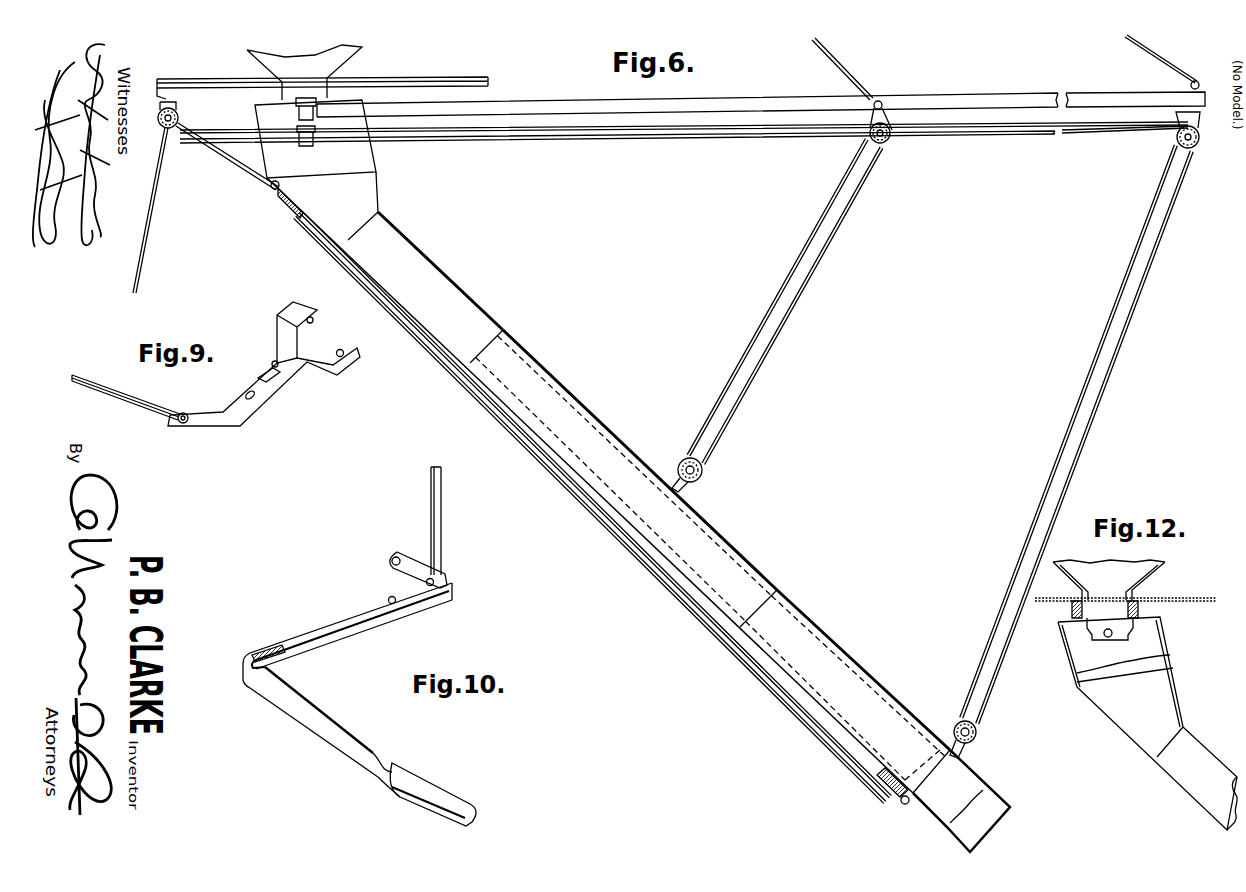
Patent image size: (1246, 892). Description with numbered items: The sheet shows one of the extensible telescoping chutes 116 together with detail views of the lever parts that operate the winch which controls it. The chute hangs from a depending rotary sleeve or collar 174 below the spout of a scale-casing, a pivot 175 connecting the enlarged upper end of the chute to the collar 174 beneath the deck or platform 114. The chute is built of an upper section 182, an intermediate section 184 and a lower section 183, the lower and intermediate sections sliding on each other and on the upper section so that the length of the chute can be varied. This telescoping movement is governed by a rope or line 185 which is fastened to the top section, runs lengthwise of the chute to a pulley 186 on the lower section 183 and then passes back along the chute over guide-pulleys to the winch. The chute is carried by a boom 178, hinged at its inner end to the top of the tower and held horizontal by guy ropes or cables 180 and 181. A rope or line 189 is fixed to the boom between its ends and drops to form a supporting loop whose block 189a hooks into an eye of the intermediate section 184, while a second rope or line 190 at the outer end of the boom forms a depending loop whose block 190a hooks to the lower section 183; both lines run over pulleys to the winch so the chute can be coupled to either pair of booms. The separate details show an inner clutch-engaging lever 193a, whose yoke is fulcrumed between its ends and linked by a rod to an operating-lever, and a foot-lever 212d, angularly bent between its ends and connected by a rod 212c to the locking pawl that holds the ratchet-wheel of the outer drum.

In FIG. 6, the table top 114 is at (413, 80).
In FIG. 12, the table top 114 is at (1202, 597).
In FIG. 6, the extensible telescoping chute 116 is at (623, 475).
In FIG. 12, the depending rotary sleeve or collar 174 is at (1145, 598).
In FIG. 12, the pivot 175 is at (1102, 637).
In FIG. 6, the boom 178 is at (528, 100).
In FIG. 6, the guy rope or cable 180 is at (1136, 50).
In FIG. 6, the guy rope or cable 181 is at (858, 72).
In FIG. 6, the upper section 182 is at (417, 257).
In FIG. 12, the upper section 182 is at (1180, 772).
In FIG. 6, the lower section 183 is at (843, 670).
In FIG. 6, the intermediate section 184 is at (612, 442).
In FIG. 6, the rope or line 185 is at (145, 273).
In FIG. 6, the pulley 186 is at (877, 782).
In FIG. 6, the rope or line 189 is at (172, 140).
In FIG. 6, the block 189a is at (707, 480).
In FIG. 6, the rope or line 190 is at (192, 143).
In FIG. 6, the block 190a is at (957, 717).
In FIG. 9, the inner clutch-engaging lever 193a is at (273, 400).
In FIG. 10, the rod 212c is at (438, 515).
In FIG. 10, the foot-lever 212d is at (327, 645).